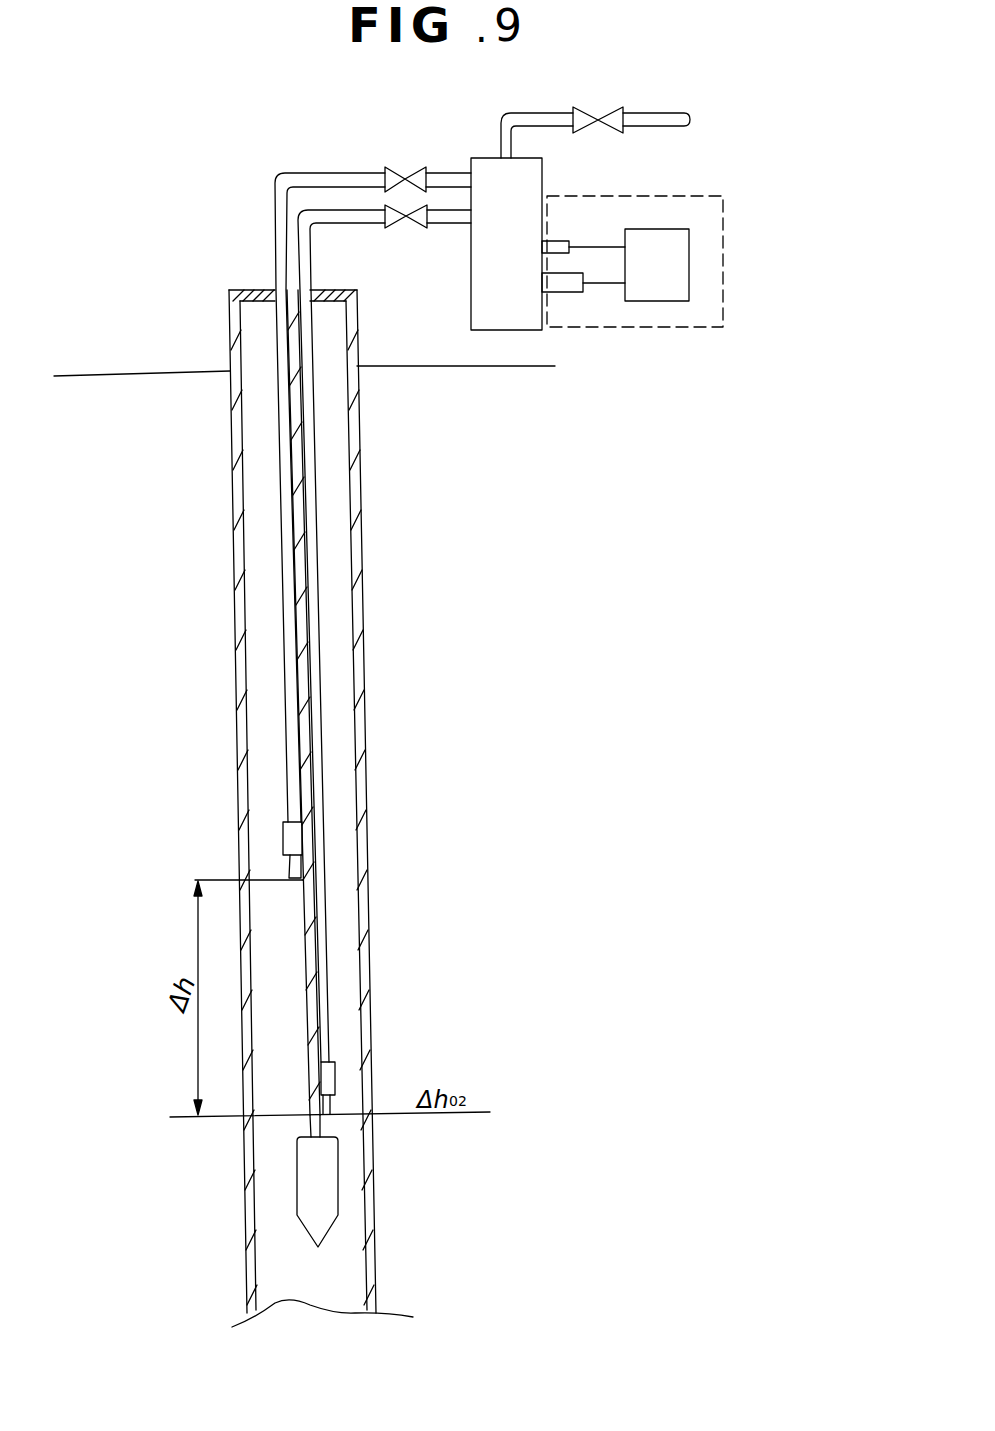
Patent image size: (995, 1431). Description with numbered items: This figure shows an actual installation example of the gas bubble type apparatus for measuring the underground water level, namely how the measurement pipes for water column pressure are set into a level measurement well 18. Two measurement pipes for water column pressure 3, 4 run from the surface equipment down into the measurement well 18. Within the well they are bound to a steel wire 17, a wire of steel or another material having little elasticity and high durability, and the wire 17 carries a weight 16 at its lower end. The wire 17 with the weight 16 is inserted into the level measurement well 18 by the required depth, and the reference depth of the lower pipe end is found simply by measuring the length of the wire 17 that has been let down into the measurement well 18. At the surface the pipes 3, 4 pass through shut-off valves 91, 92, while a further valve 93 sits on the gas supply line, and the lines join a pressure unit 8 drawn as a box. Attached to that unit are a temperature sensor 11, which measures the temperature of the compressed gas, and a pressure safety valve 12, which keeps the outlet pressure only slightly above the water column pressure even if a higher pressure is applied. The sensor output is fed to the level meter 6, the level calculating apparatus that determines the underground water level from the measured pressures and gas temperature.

The measurement pipe for water column pressure 3 is at (293, 617).
The measurement pipe for water column pressure 4 is at (317, 587).
The level meter 6 is at (657, 265).
The pressure unit 8 is at (506, 244).
The valve 9-1 91 is at (392, 172).
The valve 9-2 92 is at (393, 222).
The valve 9-3 93 is at (587, 110).
The temperature sensor 11 is at (562, 245).
The pressure safety valve 12 is at (562, 285).
The weight 16 is at (322, 1174).
The steel wire 17 is at (312, 918).
The measurement well 18 is at (367, 922).